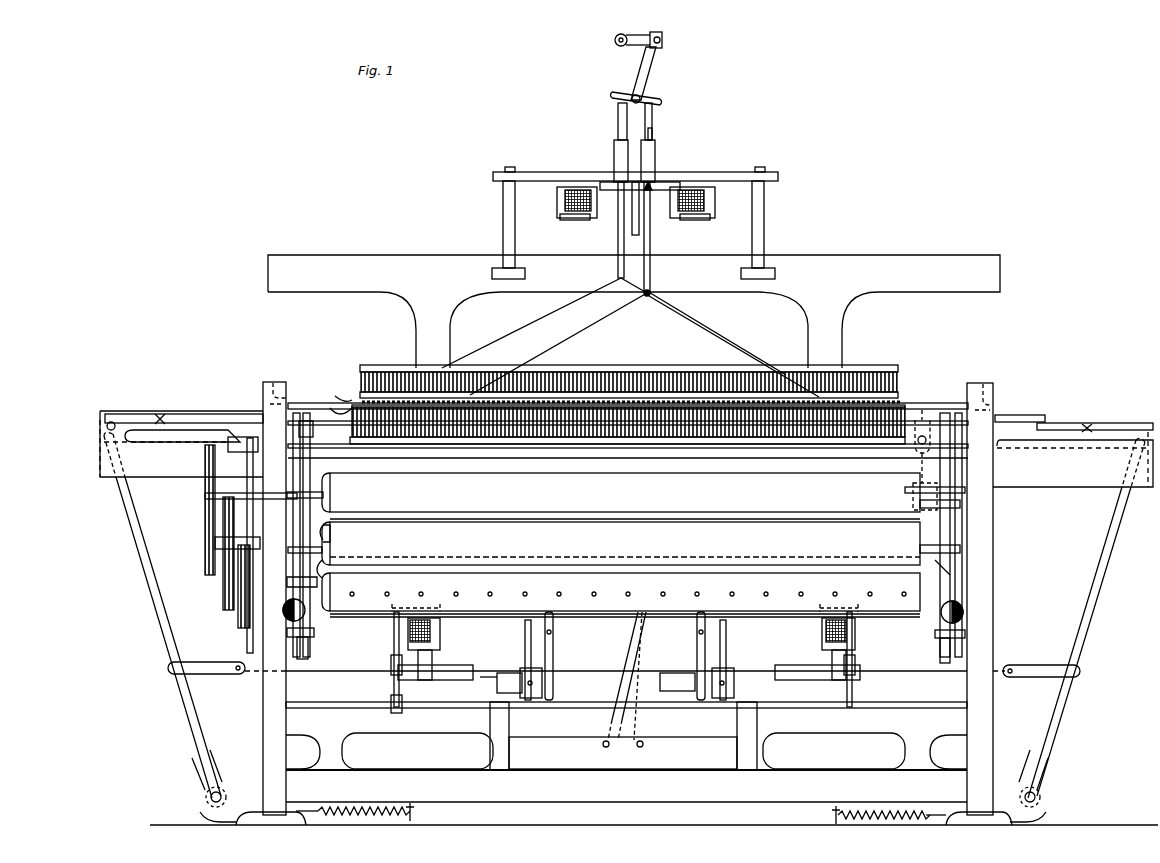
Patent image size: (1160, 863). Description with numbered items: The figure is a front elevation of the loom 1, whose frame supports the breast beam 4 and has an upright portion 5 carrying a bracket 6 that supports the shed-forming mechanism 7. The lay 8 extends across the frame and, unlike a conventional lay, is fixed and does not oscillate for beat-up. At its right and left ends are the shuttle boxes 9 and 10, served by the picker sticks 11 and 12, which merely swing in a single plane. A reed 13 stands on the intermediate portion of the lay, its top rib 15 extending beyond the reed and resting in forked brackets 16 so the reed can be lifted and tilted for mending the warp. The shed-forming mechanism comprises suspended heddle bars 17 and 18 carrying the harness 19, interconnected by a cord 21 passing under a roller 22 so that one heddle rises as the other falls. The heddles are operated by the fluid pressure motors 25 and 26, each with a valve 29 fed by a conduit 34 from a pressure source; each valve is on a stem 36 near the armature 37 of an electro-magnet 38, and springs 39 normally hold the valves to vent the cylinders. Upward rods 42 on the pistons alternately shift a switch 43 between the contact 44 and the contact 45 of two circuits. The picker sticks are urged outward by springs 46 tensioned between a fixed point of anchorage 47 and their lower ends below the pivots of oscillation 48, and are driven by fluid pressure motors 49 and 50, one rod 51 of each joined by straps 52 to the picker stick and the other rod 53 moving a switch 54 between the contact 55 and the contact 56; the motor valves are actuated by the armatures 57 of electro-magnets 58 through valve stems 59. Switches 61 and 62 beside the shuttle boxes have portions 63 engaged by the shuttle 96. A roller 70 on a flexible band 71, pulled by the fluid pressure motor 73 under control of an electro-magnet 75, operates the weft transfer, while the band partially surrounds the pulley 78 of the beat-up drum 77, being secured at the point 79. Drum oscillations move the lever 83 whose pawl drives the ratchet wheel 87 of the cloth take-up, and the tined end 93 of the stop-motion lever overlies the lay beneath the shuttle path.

The loom 1 is at (263, 708).
The breast beam 4 is at (415, 455).
The upright portion 5 is at (392, 262).
The bracket 6 is at (527, 175).
The shed-forming mechanism 7 is at (623, 247).
The lay 8 is at (175, 475).
The shuttle box 9 is at (1073, 459).
The shuttle box 10 is at (164, 448).
The picker stick 11 is at (1095, 590).
The picker stick 12 is at (150, 557).
The reed 13 is at (339, 401).
The top rib 15 is at (314, 403).
The forked bracket 16 is at (280, 383).
The heddle bar 17 is at (388, 365).
The heddle bar 18 is at (413, 392).
The harness 19 is at (616, 408).
The cord 21 is at (545, 637).
The roller 22 is at (542, 675).
The fluid pressure motor 25 is at (656, 158).
The fluid pressure motor 26 is at (614, 154).
The valve 29 is at (650, 192).
The conduit 34 is at (640, 232).
The stem 36 is at (572, 187).
The armature 37 is at (557, 200).
The electro-magnet 38 is at (580, 210).
The spring 39 is at (688, 210).
The rod 42 is at (618, 122).
The switch 43 is at (648, 78).
The contact 44 is at (663, 41).
The contact 45 is at (622, 34).
The spring 46 is at (352, 808).
The point of anchorage 47 is at (412, 812).
The pivot of oscillation 48 is at (222, 792).
The fluid pressure motor 49 is at (798, 682).
The fluid pressure motor 50 is at (458, 682).
The rod 51 is at (354, 668).
The strap 52 is at (218, 661).
The rod 53 is at (500, 673).
The switch 54 is at (625, 660).
The contact 55 is at (604, 740).
The contact 56 is at (640, 740).
The armature 57 is at (408, 604).
The electro-magnet 58 is at (440, 633).
The valve stem 59 is at (394, 636).
The switch 61 is at (1072, 423).
The switch 62 is at (143, 406).
The projecting portion 63 is at (160, 416).
The roller 70 is at (326, 558).
The flexible band 71 is at (958, 565).
The fluid pressure motor 73 is at (310, 648).
The electro-magnet 75 is at (283, 610).
The drum 77 is at (252, 437).
The pulley 78 is at (962, 473).
The point 79 is at (314, 432).
The lever 83 is at (254, 522).
The ratchet wheel 87 is at (240, 622).
The tined end 93 is at (921, 460).
The shuttle 96 is at (195, 430).